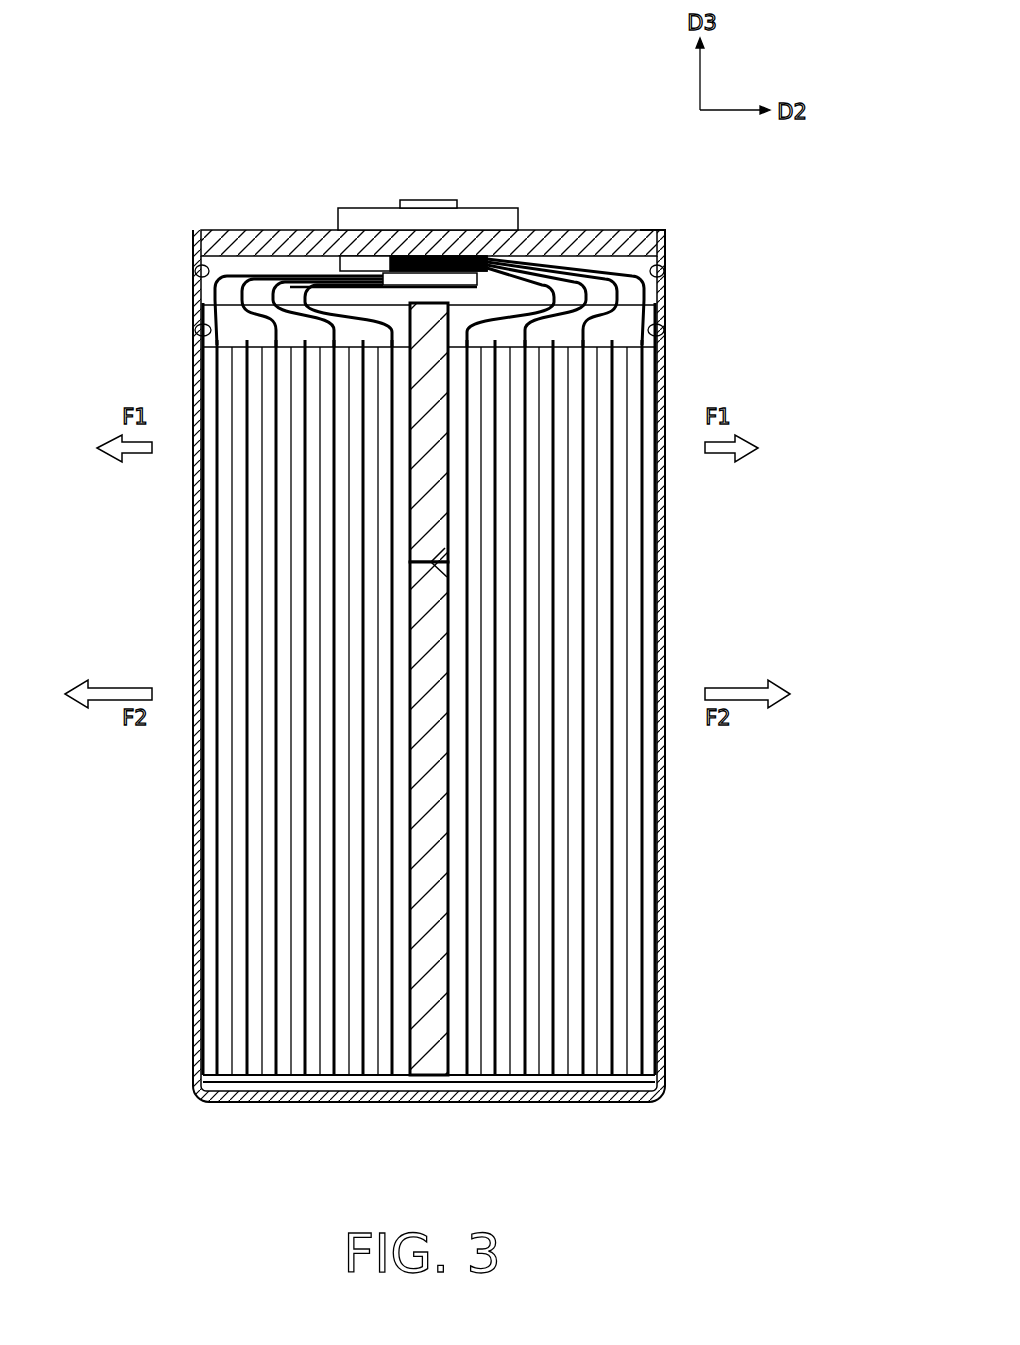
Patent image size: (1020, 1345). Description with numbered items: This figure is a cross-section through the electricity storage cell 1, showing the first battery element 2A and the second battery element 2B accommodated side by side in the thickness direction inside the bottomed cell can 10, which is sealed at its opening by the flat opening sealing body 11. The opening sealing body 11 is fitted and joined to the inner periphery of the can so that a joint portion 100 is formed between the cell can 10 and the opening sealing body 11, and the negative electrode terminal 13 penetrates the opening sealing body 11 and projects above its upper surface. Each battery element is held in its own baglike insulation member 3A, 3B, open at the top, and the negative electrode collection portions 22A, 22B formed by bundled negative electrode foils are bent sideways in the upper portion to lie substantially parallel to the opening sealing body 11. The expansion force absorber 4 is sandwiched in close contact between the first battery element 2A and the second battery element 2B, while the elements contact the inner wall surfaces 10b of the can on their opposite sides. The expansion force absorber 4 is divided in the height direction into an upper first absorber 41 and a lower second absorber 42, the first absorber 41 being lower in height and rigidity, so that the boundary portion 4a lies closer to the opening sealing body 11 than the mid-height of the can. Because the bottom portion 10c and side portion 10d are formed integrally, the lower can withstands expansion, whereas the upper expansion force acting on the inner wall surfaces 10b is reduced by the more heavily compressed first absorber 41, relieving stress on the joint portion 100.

The electricity storage cell 1 is at (245, 118).
The cell can 10 is at (665, 937).
The inner wall surface 10b is at (196, 272).
The bottom portion 10c is at (428, 1102).
The side portion 10d is at (193, 843).
The opening sealing body 11 is at (565, 230).
The joint portion 100 is at (655, 228).
The negative electrode terminal 13 is at (428, 198).
The insulation member 3A is at (660, 330).
The insulation member 3B is at (196, 330).
The first battery element 2A is at (537, 1093).
The second battery element 2B is at (318, 1093).
The negative electrode collection portion 22A is at (468, 257).
The negative electrode collection portion 22B is at (288, 274).
The expansion force absorber 4 is at (406, 689).
The first absorber 41 is at (410, 482).
The second absorber 42 is at (410, 640).
The boundary portion 4a is at (447, 562).